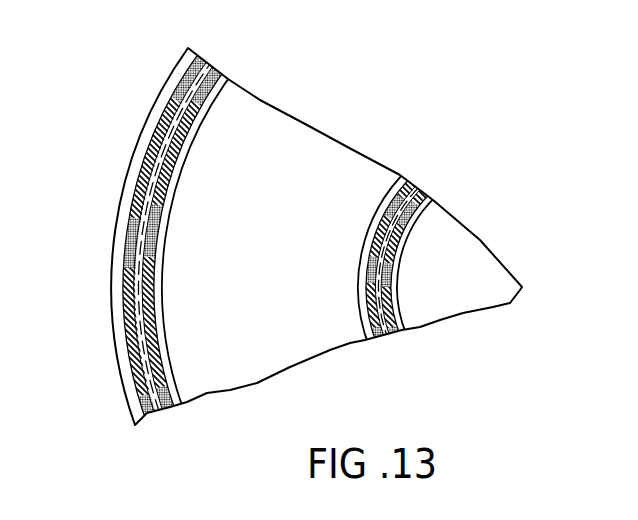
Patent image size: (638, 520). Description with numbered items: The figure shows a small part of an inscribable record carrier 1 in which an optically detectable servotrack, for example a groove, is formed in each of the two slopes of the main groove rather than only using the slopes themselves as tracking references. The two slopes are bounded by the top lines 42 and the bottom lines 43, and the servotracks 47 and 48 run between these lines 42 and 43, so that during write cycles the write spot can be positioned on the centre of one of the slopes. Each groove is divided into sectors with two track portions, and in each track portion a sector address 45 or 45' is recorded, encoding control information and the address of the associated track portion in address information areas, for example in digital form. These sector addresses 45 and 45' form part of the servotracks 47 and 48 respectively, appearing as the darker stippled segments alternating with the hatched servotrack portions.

The record carrier 1 is at (307, 123).
The top lines 42 is at (196, 30).
The bottom lines 43 is at (210, 64).
The sector address 45 is at (244, 238).
The sector address 45' is at (251, 241).
The servotrack 47 is at (148, 163).
The servotrack 48 is at (128, 212).